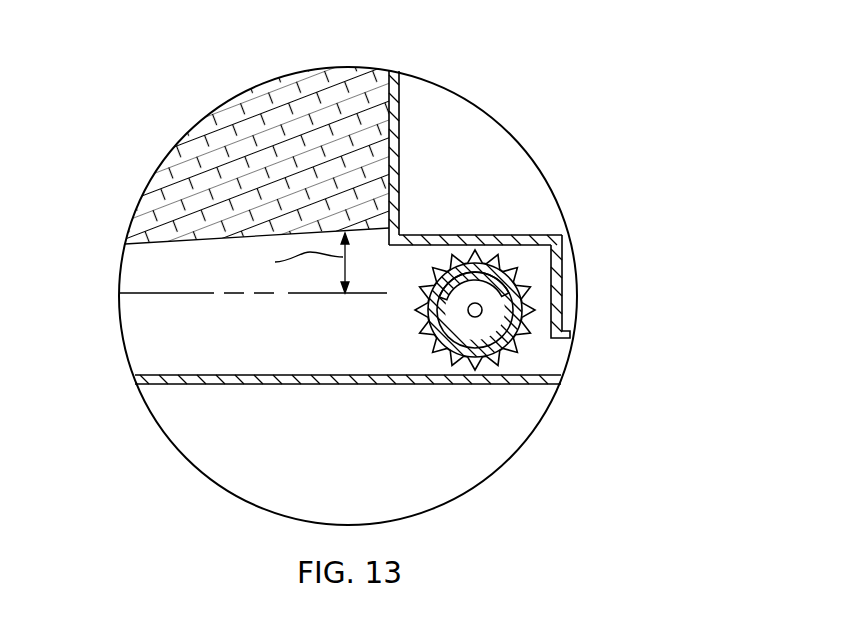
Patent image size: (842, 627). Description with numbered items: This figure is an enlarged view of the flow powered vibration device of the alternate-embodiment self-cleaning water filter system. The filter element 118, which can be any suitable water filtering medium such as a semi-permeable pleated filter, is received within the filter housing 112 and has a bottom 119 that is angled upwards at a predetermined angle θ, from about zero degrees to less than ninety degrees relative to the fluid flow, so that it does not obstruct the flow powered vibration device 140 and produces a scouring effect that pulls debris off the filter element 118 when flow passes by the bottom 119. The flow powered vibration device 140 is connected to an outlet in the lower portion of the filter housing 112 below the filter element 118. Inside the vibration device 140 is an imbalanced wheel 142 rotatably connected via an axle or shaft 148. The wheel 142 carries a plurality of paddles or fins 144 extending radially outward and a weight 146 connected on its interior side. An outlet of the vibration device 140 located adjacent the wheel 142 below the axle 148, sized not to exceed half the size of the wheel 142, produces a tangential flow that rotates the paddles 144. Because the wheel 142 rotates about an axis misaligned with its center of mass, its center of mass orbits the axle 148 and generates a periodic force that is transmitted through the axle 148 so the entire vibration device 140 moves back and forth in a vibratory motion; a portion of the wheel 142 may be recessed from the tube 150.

The filter housing 112 is at (400, 140).
The filter element 118 is at (163, 166).
The bottom 119 is at (225, 236).
The flow powered vibration device 140 is at (495, 235).
The imbalanced wheel 142 is at (479, 305).
The paddles or fins 144 is at (415, 308).
The weight 146 is at (500, 272).
The axle or shaft 148 is at (438, 352).
The tube 150 is at (572, 331).